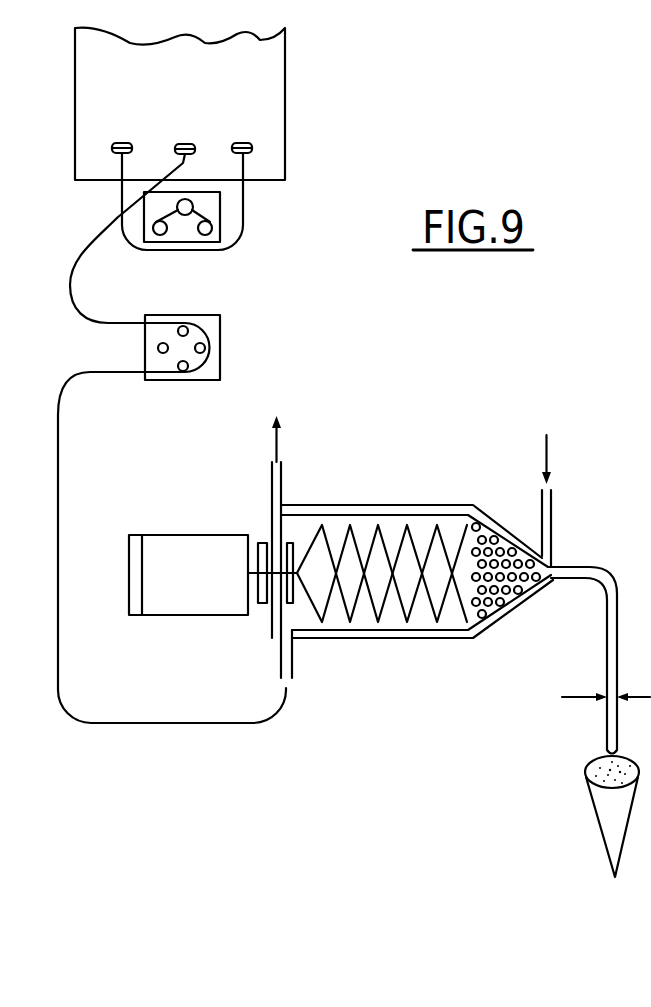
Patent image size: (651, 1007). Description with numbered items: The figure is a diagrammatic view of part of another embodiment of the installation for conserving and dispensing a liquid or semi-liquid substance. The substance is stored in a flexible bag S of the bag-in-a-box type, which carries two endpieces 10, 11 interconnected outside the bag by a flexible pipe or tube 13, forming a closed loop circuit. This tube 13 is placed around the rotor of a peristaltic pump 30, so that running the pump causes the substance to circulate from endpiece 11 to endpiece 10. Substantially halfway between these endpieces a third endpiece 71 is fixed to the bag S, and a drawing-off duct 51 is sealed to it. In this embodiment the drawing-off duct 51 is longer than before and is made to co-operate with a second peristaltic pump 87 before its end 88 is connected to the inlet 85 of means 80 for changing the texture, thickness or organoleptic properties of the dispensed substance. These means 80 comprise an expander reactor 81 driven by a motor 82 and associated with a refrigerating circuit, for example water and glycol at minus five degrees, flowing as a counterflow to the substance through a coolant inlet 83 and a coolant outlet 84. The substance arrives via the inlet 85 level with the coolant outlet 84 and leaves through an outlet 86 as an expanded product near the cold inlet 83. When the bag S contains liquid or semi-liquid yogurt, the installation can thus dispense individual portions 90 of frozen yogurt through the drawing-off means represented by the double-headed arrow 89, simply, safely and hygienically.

The flexible bag S is at (287, 83).
The endpiece 10 is at (129, 127).
The endpiece 11 is at (244, 128).
The third endpiece 71 is at (183, 143).
The flexible pipe or tube 13 is at (245, 214).
The peristaltic pump 30 is at (204, 252).
The drawing-off duct 51 is at (74, 268).
The peristaltic pump 87 is at (230, 357).
The end of drawing-off duct 88 is at (290, 683).
The motor 82 is at (195, 601).
The coolant outlet 84 is at (272, 480).
The substance inlet 85 is at (279, 668).
The means for changing the texture, thickness and/or organoleptic properties 80 is at (452, 486).
The expander reactor 81 is at (362, 626).
The coolant inlet 83 is at (552, 524).
The outlet 86 is at (606, 663).
The drawing-off means 89 is at (577, 697).
The individual portions 90 is at (605, 805).